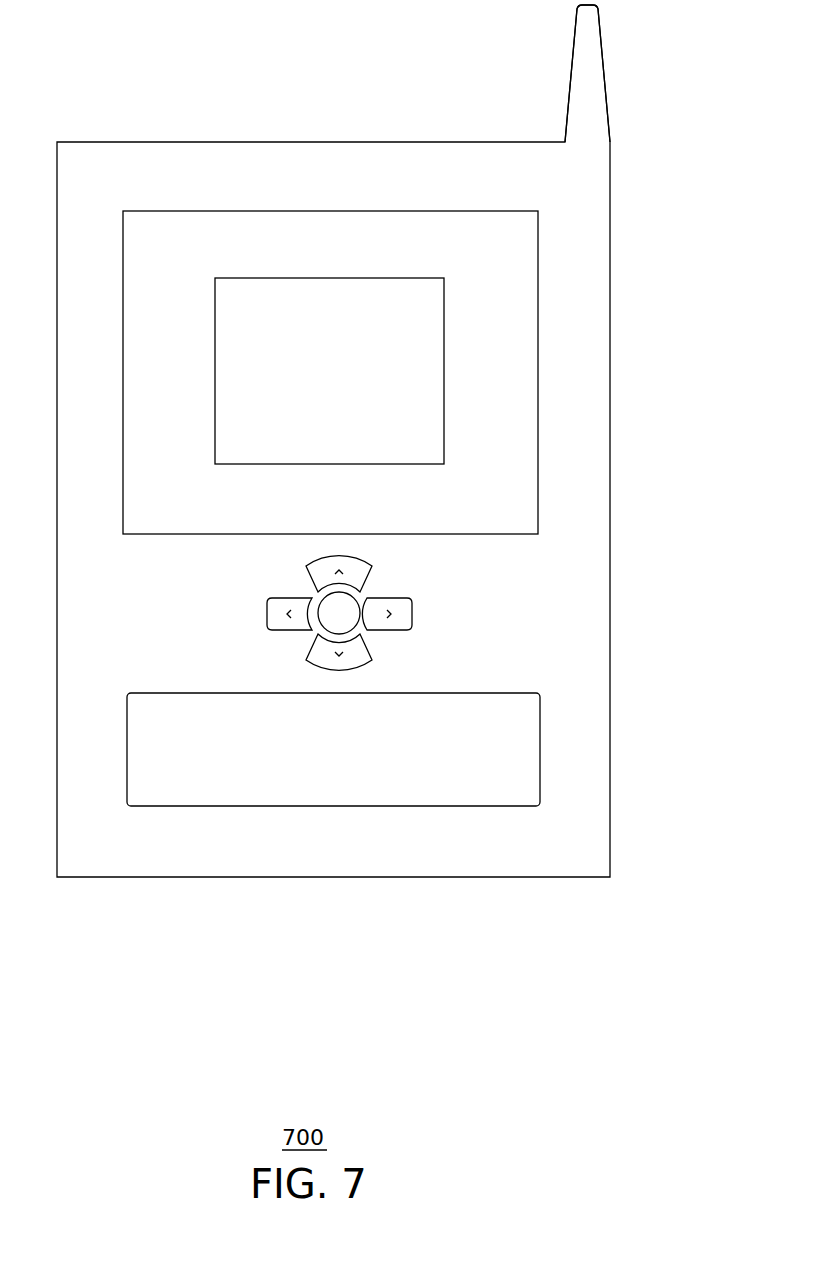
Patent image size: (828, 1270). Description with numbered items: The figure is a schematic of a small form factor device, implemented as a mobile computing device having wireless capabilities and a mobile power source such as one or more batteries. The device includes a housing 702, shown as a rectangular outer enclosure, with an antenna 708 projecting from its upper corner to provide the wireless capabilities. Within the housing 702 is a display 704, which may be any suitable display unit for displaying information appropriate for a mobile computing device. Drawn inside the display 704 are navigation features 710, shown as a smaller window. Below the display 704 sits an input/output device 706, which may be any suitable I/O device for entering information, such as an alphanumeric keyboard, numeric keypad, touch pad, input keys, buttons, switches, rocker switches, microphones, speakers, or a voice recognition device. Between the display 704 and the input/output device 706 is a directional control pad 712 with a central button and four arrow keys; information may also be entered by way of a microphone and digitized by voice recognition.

The housing 702 is at (611, 493).
The display 704 is at (479, 210).
The input/output (I/O) device 706 is at (540, 720).
The antenna 708 is at (572, 50).
The navigation features 710 is at (391, 278).
The navigation pad 712 is at (422, 603).